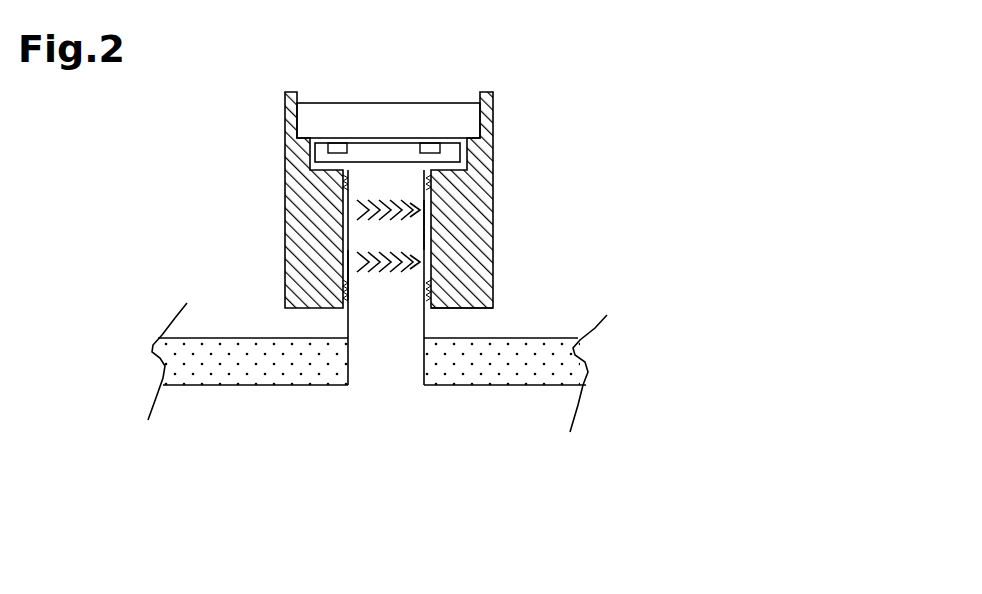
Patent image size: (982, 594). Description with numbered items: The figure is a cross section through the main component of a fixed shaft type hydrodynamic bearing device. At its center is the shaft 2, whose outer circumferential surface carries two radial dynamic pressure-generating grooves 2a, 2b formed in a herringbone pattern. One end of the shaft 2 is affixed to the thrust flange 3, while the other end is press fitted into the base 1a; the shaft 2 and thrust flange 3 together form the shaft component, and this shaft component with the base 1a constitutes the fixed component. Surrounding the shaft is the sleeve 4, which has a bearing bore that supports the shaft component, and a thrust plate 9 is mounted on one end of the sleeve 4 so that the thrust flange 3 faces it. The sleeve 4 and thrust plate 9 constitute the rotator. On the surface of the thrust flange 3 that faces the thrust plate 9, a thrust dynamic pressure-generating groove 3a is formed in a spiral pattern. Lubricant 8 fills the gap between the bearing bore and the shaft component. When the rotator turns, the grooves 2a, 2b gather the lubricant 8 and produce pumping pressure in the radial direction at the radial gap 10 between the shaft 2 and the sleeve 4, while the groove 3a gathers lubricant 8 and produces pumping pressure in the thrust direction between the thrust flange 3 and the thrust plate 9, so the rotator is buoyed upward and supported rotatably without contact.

The base 1a is at (248, 377).
The shaft 2 is at (375, 360).
The radial dynamic pressure-generating groove 2a is at (385, 280).
The radial dynamic pressure-generating groove 2b is at (385, 217).
The thrust flange 3 is at (405, 147).
The thrust dynamic pressure-generating groove 3a is at (330, 150).
The sleeve 4 is at (467, 308).
The lubricant 8 is at (492, 130).
The thrust plate 9 is at (380, 118).
The radial gap 10 is at (424, 208).